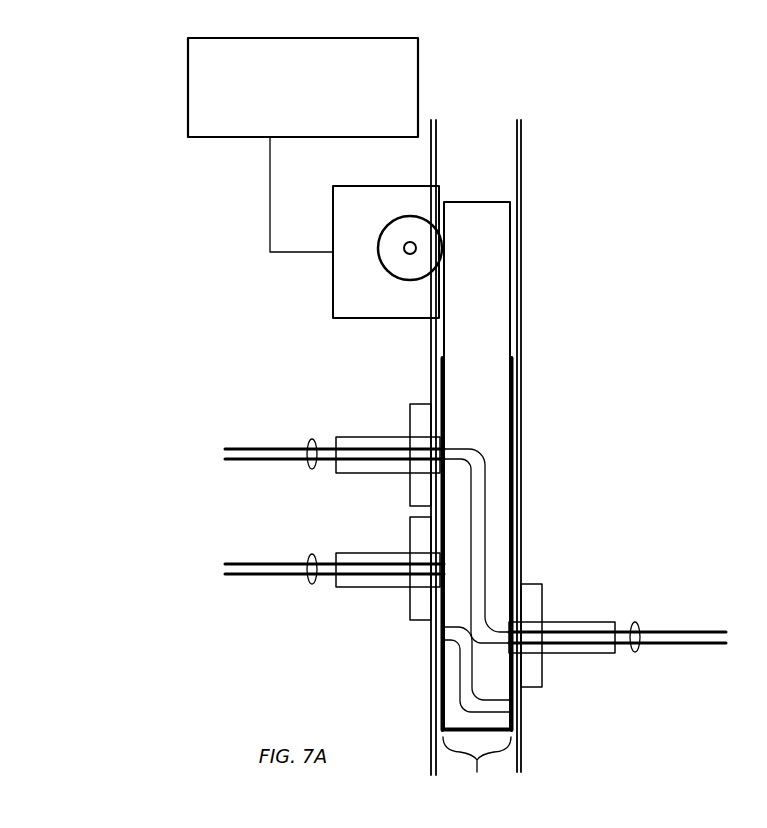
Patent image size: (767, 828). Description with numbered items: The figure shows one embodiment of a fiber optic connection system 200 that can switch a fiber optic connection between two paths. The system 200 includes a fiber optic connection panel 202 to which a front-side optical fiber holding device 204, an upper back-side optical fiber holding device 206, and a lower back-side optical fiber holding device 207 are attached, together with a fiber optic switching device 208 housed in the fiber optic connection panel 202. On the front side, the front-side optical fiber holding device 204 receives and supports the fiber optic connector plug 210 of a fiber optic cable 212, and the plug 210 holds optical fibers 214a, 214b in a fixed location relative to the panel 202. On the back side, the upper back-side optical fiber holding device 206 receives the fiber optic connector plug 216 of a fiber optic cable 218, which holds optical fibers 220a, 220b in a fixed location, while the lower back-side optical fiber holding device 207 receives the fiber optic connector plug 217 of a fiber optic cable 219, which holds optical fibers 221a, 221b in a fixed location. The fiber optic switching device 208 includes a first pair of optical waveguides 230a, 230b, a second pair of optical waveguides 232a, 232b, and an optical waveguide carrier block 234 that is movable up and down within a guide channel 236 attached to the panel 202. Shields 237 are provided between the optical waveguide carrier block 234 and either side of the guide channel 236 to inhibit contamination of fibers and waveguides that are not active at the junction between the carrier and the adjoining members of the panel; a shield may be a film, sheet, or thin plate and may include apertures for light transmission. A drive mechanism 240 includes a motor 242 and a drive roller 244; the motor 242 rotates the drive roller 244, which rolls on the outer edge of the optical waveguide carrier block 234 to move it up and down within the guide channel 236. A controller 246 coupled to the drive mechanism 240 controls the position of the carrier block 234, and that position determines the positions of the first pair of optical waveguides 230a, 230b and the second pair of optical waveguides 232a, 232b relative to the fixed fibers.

The system 200 is at (519, 71).
The fiber optic connection panel 202 is at (522, 197).
The front-side optical fiber holding device 204 is at (542, 598).
The upper back-side optical fiber holding device 206 is at (410, 488).
The lower back-side optical fiber holding device 207 is at (410, 605).
The fiber optic switching device 208 is at (515, 403).
The fiber optic connector plug 210 is at (580, 654).
The fiber optic cable 212 is at (624, 647).
The optical fiber 214a is at (690, 629).
The optical fiber 214b is at (668, 647).
The fiber optic connector plug 216 is at (370, 437).
The fiber optic connector plug 217 is at (372, 553).
The fiber optic cable 218 is at (293, 453).
The fiber optic cable 219 is at (293, 568).
The optical fiber 220a is at (257, 447).
The optical fiber 220b is at (262, 461).
The optical fiber 221a is at (257, 562).
The optical fiber 221b is at (262, 576).
The optical waveguide 230a is at (485, 482).
The optical waveguide 230b is at (471, 492).
The optical waveguide 232a is at (472, 684).
The optical waveguide 232b is at (460, 677).
The optical waveguide carrier block 234 is at (493, 359).
The guide channel 236 is at (478, 187).
The shield 237 is at (477, 767).
The drive mechanism 240 is at (343, 238).
The motor 242 is at (377, 313).
The drive roller 244 is at (410, 216).
The controller 246 is at (401, 133).